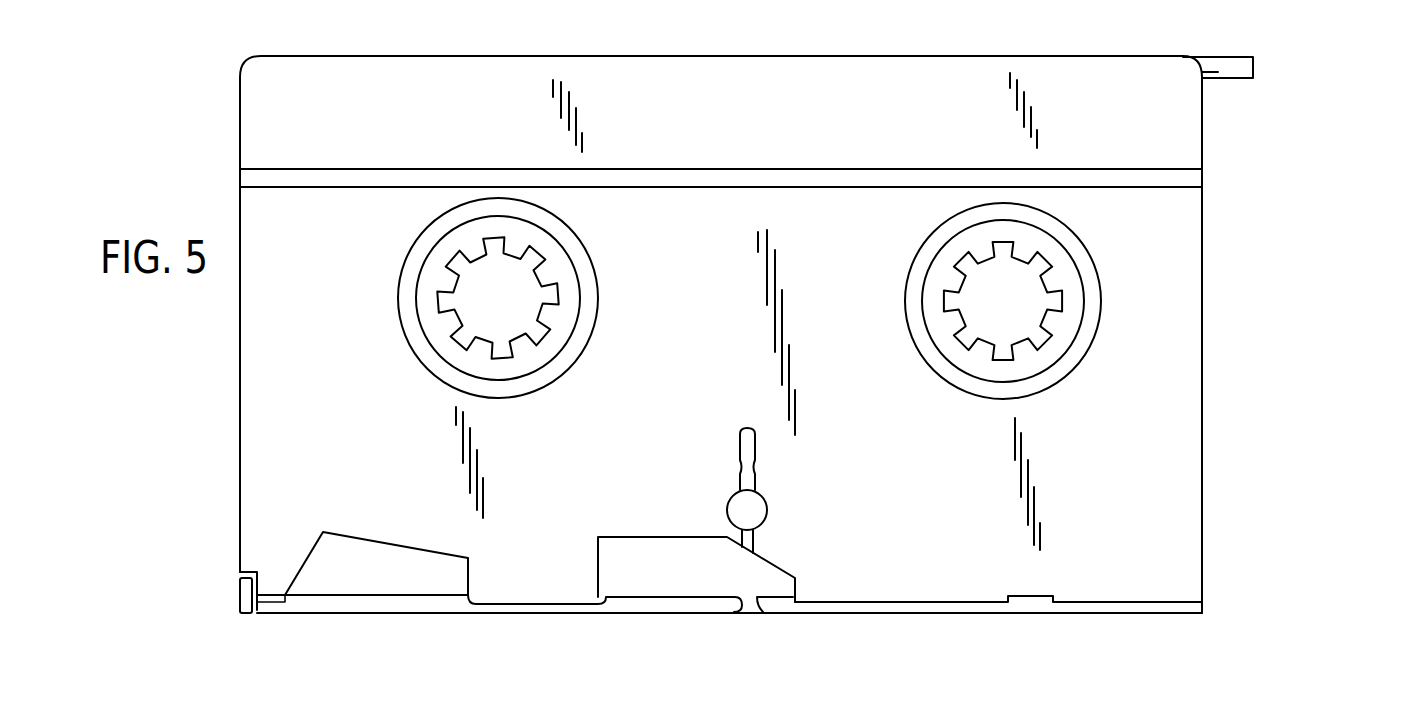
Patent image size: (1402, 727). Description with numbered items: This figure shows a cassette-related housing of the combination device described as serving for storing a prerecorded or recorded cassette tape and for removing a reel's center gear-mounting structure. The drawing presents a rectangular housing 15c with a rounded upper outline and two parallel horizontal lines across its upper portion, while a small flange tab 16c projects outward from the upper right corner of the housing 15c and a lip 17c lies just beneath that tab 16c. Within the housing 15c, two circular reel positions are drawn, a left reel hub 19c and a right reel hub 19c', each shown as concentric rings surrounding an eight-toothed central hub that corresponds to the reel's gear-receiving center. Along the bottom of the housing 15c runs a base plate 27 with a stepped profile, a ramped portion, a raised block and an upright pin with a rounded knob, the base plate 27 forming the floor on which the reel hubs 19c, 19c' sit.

The cassette housing 15c is at (503, 47).
The flange tab 16c is at (1253, 68).
The lip 17c is at (1215, 75).
The reel hub 19c is at (539, 298).
The reel hub 19c' is at (1036, 301).
The base plate 27 is at (952, 613).